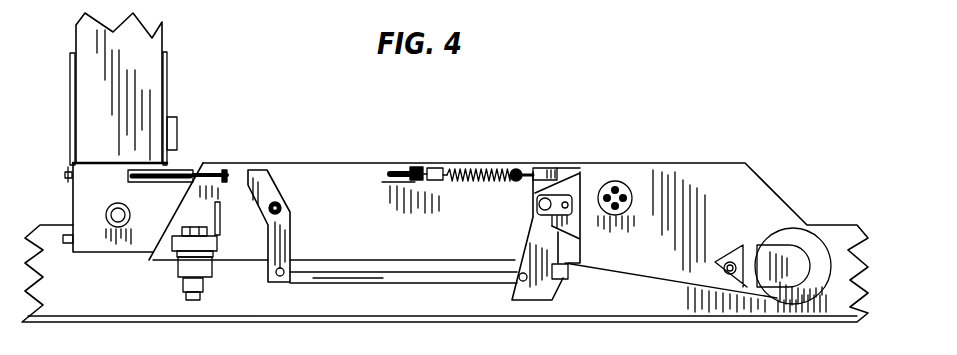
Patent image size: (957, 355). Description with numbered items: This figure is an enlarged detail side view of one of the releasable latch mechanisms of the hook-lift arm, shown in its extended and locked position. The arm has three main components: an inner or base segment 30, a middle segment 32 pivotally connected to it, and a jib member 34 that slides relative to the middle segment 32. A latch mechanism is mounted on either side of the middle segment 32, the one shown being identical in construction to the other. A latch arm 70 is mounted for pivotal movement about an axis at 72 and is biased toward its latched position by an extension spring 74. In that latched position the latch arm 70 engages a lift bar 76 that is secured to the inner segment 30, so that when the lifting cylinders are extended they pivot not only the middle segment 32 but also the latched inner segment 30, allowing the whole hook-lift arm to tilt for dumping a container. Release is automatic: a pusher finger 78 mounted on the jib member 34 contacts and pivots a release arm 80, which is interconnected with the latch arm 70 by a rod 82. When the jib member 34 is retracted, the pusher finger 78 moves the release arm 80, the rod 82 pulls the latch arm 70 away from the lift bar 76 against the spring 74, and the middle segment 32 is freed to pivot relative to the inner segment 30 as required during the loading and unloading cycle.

The inner segment 30 is at (650, 170).
The middle segment 32 is at (308, 167).
The jib member 34 is at (150, 70).
The latch arm 70 is at (547, 245).
The pivot axis 72 is at (537, 202).
The extension spring 74 is at (468, 167).
The lift bar 76 is at (562, 273).
The pusher finger 78 is at (186, 170).
The release arm 80 is at (285, 242).
The rod 82 is at (370, 278).